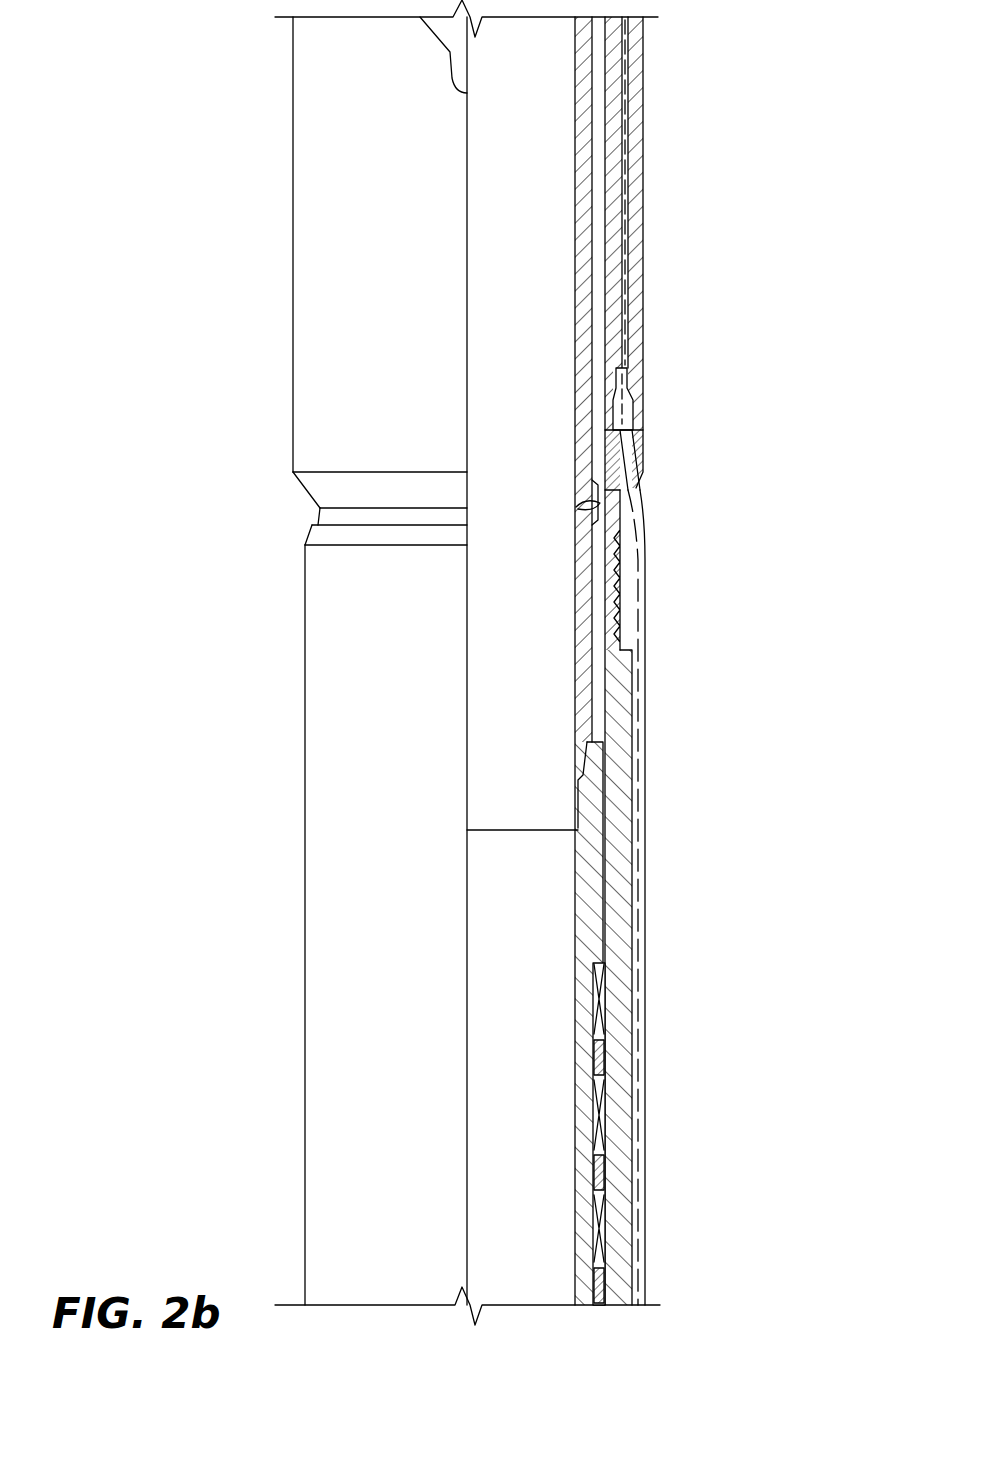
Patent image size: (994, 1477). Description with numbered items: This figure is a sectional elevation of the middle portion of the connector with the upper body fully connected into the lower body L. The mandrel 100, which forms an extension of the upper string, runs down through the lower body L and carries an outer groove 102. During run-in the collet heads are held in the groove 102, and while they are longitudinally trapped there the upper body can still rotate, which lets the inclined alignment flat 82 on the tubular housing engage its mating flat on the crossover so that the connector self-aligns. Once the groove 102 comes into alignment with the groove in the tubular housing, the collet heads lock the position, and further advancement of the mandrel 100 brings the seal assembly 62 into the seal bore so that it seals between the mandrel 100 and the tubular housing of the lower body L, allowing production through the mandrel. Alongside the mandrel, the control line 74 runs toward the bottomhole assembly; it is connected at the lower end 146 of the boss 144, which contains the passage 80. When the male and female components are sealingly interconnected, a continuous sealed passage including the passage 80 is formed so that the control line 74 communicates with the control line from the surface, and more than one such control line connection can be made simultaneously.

The alignment flat 82 is at (430, 32).
The passage 80 is at (630, 40).
The boss 144 is at (643, 84).
The lower body L is at (653, 152).
The mandrel 100 is at (575, 310).
The lower end of boss 146 is at (645, 417).
The outer groove 102 is at (585, 506).
The control line 74 is at (647, 621).
The seal assembly 62 is at (594, 1022).